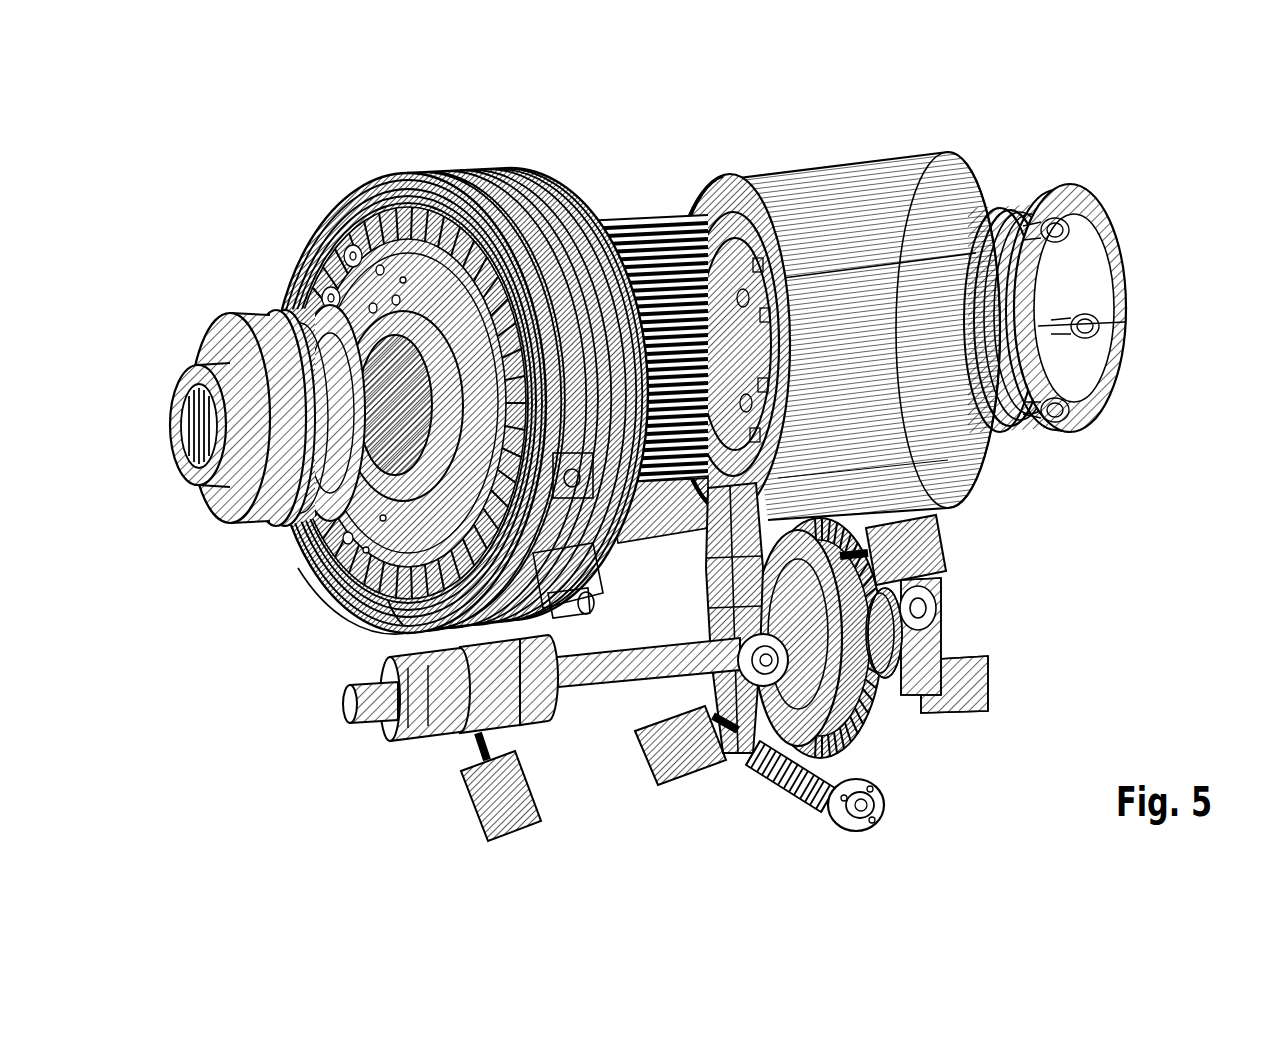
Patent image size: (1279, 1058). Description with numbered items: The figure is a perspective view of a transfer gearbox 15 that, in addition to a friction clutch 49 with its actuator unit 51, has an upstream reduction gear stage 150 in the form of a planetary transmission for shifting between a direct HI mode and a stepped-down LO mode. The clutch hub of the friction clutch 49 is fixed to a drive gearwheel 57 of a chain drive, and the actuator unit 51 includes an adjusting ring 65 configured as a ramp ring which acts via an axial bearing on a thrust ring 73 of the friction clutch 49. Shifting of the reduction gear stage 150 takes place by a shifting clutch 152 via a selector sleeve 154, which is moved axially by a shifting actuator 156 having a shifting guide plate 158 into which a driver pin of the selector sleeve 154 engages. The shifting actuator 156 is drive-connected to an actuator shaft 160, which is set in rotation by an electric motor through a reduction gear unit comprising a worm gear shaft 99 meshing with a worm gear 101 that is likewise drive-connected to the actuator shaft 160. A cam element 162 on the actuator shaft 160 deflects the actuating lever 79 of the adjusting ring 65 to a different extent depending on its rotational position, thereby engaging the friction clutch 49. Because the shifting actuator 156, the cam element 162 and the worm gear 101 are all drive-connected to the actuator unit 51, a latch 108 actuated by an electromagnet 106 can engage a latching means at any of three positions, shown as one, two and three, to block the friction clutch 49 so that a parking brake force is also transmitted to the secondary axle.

The transfer gearbox 15 is at (1108, 532).
The friction clutch 49 is at (877, 203).
The actuator unit 51 is at (664, 98).
The drive gearwheel 57 is at (612, 210).
The adjusting ring 65 is at (663, 185).
The thrust ring 73 is at (720, 220).
The actuating lever 79 is at (715, 547).
The worm gear shaft 99 is at (793, 783).
The worm gear 101 is at (860, 720).
The electromagnet 106 is at (942, 545).
The latch 108 is at (905, 520).
The reduction gear stage 150 is at (447, 160).
The shifting clutch 152 is at (321, 623).
The selector sleeve 154 is at (395, 617).
The shifting actuator 156 is at (380, 717).
The shifting guide plate 158 is at (513, 702).
The actuator shaft 160 is at (660, 637).
The cam element 162 is at (747, 747).